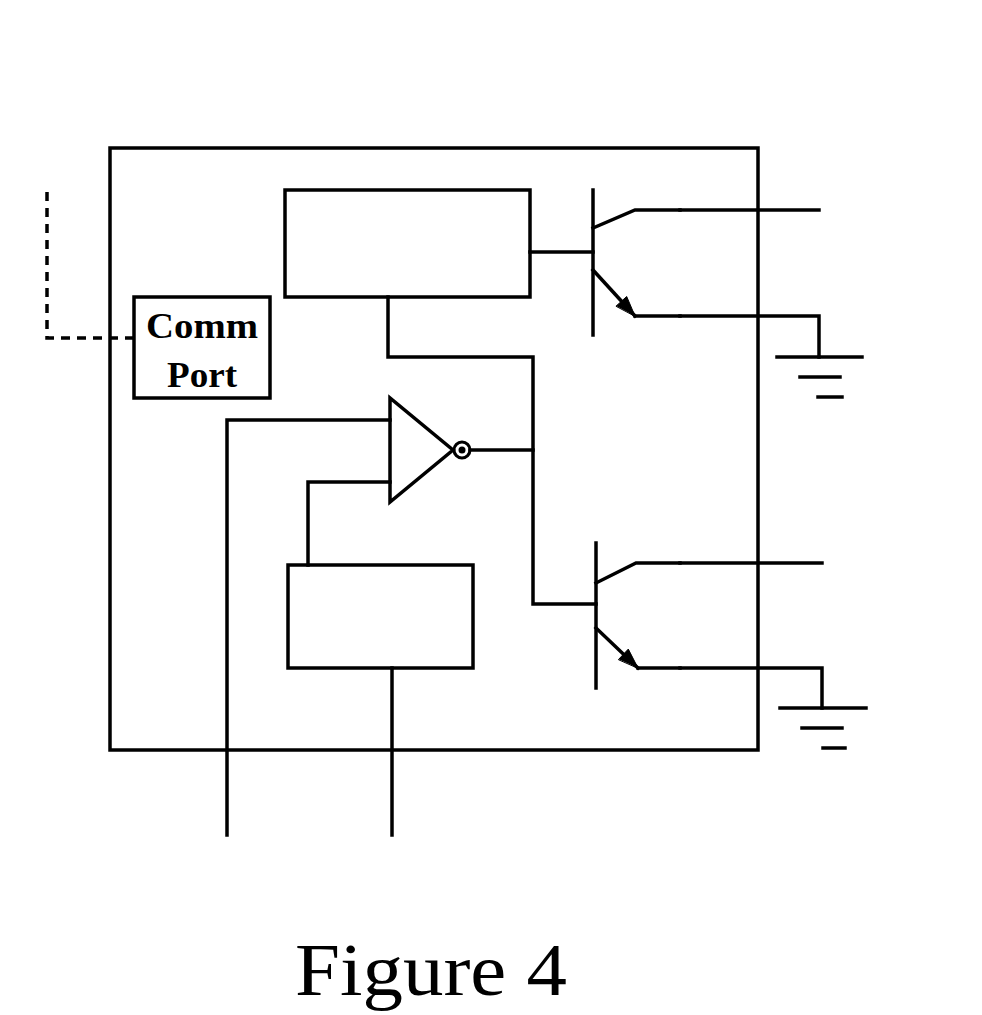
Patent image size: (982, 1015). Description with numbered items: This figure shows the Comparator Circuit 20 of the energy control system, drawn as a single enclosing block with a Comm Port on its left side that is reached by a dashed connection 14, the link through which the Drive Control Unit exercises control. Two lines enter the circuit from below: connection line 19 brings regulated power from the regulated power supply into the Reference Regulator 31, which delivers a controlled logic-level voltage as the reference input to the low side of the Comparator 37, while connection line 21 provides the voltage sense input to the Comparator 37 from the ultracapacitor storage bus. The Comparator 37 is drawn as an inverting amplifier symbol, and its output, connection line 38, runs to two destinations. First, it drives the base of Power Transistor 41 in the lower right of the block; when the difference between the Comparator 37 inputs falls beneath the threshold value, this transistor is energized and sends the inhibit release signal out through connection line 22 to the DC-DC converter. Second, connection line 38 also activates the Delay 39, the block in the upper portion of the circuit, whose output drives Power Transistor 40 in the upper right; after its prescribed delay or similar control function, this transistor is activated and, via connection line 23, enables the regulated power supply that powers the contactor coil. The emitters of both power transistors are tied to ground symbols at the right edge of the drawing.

The connection 14 is at (89, 235).
The connection line 19 is at (456, 751).
The Comparator Circuit 20 is at (449, 157).
The connection line 21 is at (308, 641).
The connection line 22 is at (767, 563).
The connection line 23 is at (779, 205).
The Reference Regulator 31 is at (473, 650).
The Comparator 37 is at (423, 483).
The connection line 38 is at (561, 426).
The Delay 39 is at (285, 238).
The Power Transistor 40 is at (594, 211).
The Power Transistor 41 is at (596, 552).